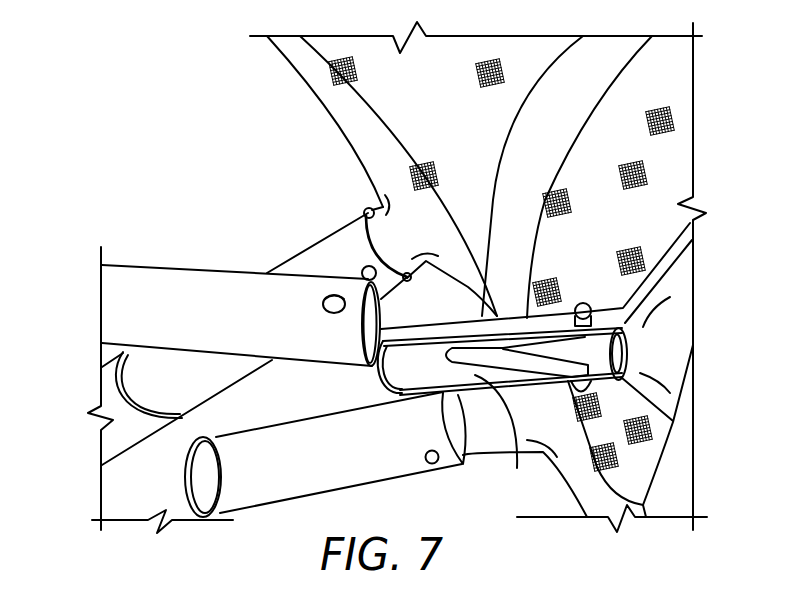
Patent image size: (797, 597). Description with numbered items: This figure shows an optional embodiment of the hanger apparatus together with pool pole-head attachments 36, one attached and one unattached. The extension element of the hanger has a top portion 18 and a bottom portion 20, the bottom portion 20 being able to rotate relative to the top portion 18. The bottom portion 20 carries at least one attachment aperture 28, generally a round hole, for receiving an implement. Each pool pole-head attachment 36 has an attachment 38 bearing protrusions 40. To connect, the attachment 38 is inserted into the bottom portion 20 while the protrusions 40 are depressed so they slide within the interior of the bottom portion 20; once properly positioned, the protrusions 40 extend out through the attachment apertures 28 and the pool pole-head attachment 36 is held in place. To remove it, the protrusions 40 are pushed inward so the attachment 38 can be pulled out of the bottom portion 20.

The top portion 18 is at (112, 392).
The bottom portion 20 is at (275, 264).
The attachment aperture 28 is at (345, 268).
The pool pole-head attachment 36 is at (303, 82).
The attachment 38 is at (382, 202).
The protrusion 40 is at (364, 211).